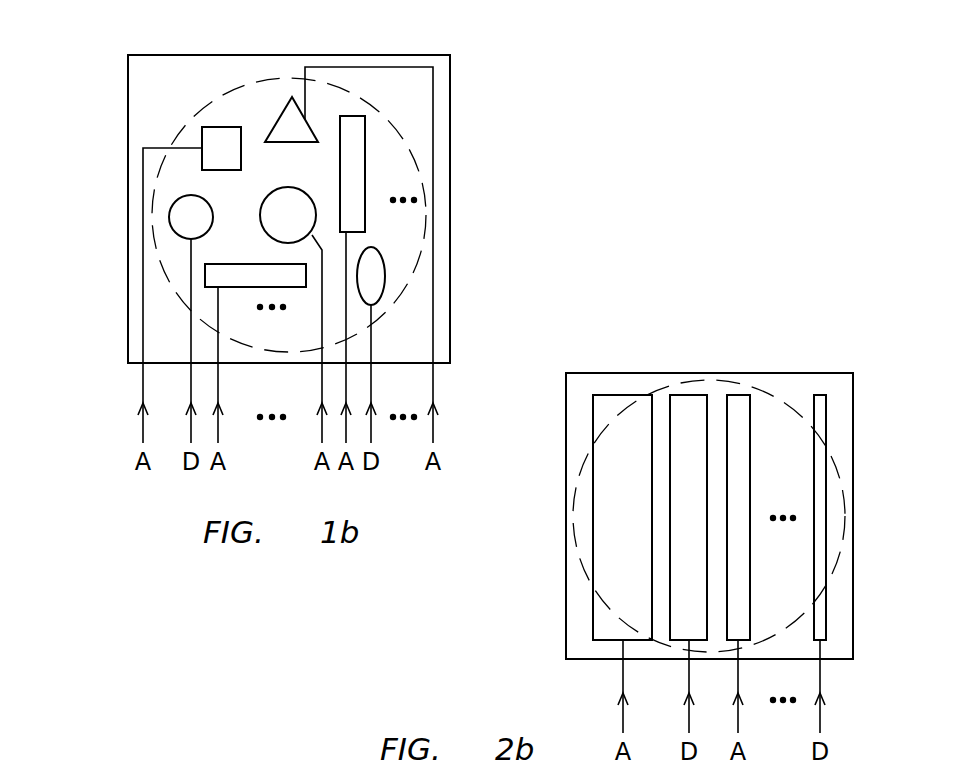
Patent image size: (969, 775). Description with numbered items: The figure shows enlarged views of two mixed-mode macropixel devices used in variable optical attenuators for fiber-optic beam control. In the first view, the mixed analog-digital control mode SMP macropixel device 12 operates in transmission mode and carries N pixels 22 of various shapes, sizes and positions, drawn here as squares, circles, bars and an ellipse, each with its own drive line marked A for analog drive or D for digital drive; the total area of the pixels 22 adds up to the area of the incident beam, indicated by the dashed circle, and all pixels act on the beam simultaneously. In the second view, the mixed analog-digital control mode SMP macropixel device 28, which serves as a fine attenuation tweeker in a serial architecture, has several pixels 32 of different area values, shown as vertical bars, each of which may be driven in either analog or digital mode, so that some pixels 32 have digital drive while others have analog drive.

In FIG. 1B, the mixed-mode SMP macropixel device 12 is at (128, 73).
In FIG. 1B, the pixels 22 is at (281, 113).
In FIG. 2B, the mixed analog-digital control mode SMP macropixel device 28 is at (566, 592).
In FIG. 2B, the pixels 32 is at (623, 395).